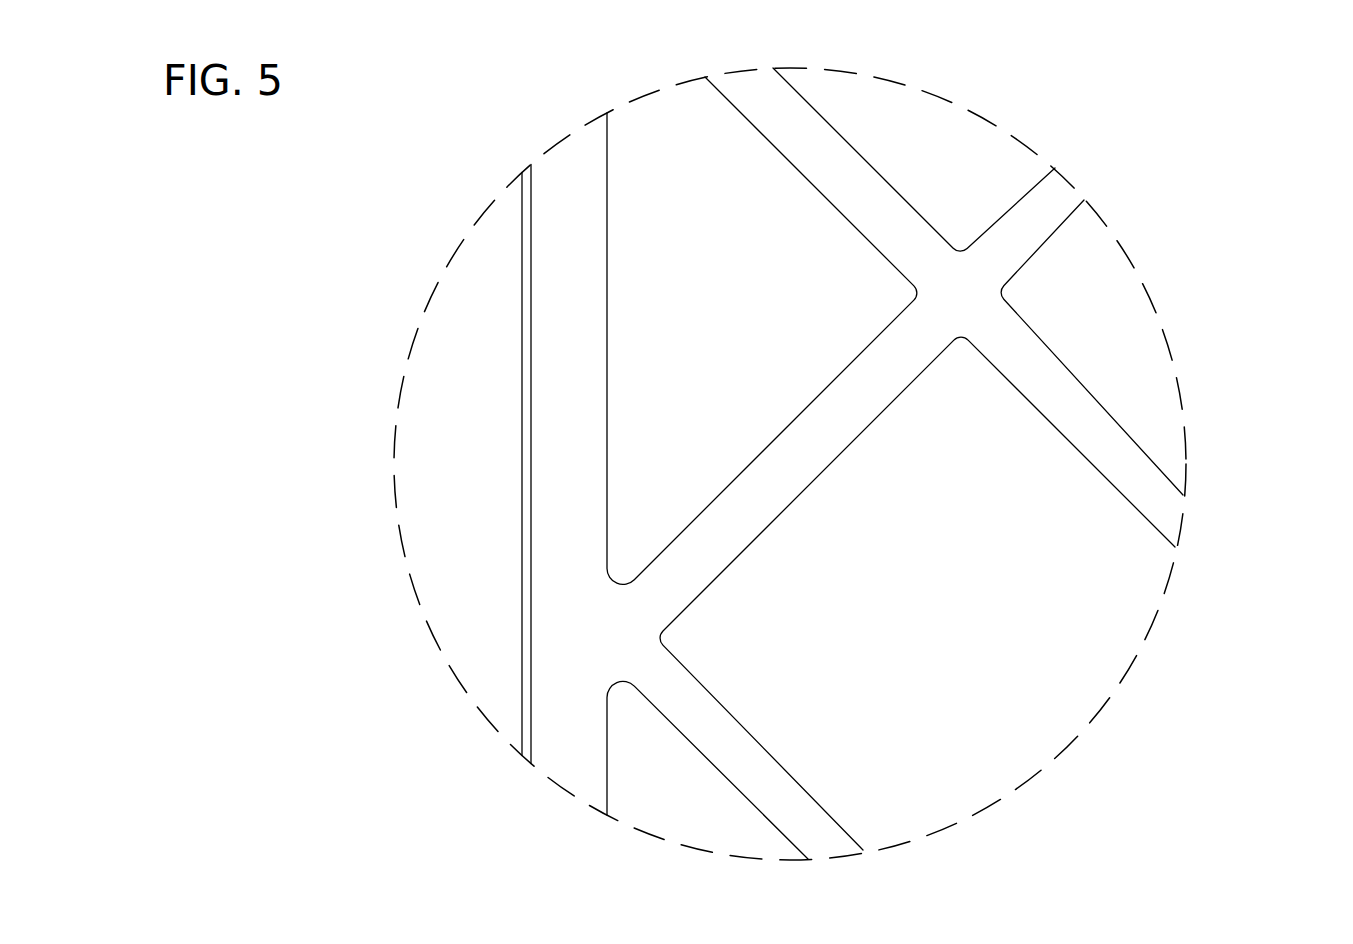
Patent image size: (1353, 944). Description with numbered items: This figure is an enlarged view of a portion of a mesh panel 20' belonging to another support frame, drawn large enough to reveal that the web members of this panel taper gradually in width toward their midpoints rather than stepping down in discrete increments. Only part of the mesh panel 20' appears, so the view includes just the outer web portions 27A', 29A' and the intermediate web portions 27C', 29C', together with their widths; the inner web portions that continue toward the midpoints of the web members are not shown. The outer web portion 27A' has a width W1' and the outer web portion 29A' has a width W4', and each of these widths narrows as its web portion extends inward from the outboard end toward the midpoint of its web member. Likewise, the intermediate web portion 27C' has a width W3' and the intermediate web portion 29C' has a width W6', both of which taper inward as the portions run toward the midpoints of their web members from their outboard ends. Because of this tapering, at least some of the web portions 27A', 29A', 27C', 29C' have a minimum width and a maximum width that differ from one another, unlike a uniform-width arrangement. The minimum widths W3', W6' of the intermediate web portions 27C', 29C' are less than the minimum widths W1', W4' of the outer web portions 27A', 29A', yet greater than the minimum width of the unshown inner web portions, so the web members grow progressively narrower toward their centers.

The mesh panel 20' is at (444, 463).
The outer web portion 27A' is at (762, 330).
The intermediate web portion 27C' is at (1100, 325).
The outer web portion 29A' is at (831, 455).
The intermediate web portion 29C' is at (985, 593).
The width of outer web portion W1' is at (737, 489).
The width of intermediate web portion W3' is at (1042, 247).
The width of outer web portion W4' is at (877, 182).
The width of intermediate web portion W6' is at (1060, 441).